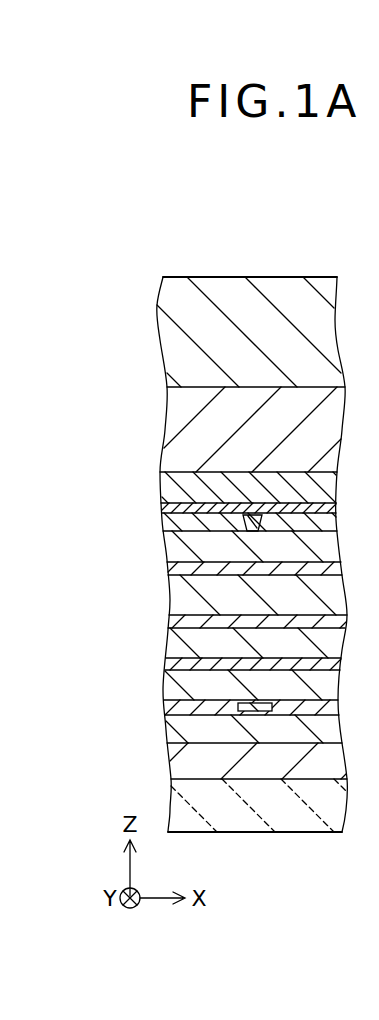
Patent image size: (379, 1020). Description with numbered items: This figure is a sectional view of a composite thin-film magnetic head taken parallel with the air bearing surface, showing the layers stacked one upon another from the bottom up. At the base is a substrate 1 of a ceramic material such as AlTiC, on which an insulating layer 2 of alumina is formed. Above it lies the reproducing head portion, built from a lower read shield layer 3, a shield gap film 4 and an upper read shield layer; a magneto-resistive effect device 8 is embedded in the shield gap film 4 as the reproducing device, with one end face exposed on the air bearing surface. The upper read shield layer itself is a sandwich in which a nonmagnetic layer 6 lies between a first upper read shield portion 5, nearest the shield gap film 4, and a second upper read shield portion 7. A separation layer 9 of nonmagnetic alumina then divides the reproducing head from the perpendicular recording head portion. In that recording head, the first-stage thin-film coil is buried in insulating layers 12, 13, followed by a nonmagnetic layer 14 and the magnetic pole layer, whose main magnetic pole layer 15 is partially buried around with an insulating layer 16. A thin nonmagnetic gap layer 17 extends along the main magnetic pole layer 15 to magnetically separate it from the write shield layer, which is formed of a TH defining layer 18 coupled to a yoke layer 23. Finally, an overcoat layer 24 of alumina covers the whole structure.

The substrate 1 is at (336, 817).
The insulating layer 2 is at (313, 763).
The lower read shield layer 3 is at (292, 732).
The shield gap film 4 is at (235, 713).
The upper read shield portion 5 is at (218, 692).
The nonmagnetic layer 6 is at (202, 665).
The upper read shield portion 7 is at (178, 650).
The magneto-resistive effect device 8 is at (257, 718).
The separation layer 9 is at (170, 624).
The insulating layer 12 is at (174, 597).
The insulating layer 13 is at (172, 570).
The nonmagnetic layer 14 is at (172, 543).
The main magnetic pole layer 15 is at (300, 520).
The insulating layer 16 is at (313, 505).
The gap layer 17 is at (183, 504).
The TH defining layer 18 is at (217, 481).
The yoke layer 23 is at (255, 428).
The overcoat layer 24 is at (272, 298).